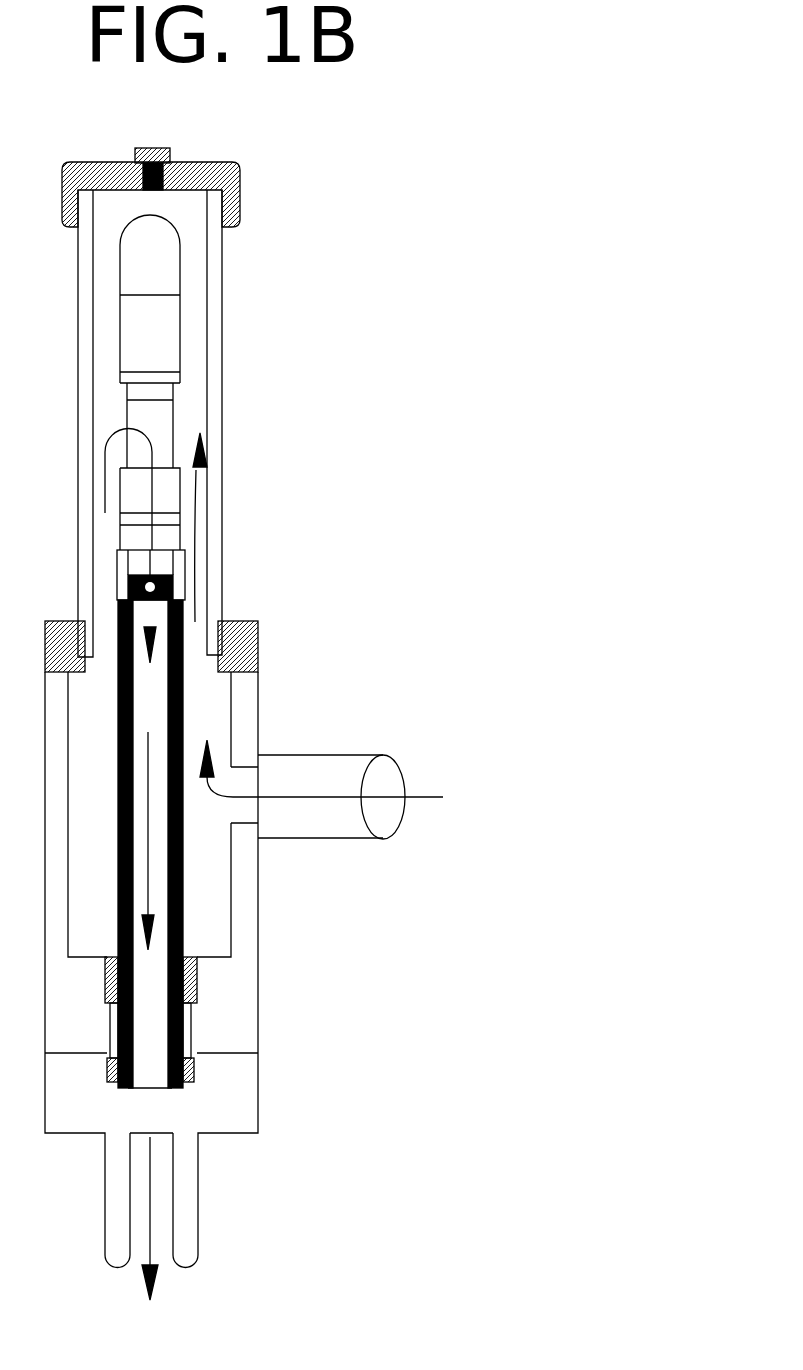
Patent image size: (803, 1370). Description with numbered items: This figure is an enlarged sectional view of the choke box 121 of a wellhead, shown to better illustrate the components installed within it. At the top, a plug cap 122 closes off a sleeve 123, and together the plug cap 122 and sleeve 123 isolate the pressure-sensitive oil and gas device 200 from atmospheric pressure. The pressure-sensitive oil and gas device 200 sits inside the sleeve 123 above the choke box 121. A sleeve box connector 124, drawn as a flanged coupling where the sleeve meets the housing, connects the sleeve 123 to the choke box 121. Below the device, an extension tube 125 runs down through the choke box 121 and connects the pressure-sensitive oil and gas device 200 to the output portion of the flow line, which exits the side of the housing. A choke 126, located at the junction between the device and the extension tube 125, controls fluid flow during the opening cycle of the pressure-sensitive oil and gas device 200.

The plug cap 122 is at (237, 170).
The pressure-sensitive oil and gas device 200 is at (162, 327).
The sleeve 123 is at (215, 415).
The choke 126 is at (180, 577).
The sleeve box connector 124 is at (258, 653).
The choke box 121 is at (245, 728).
The extension tube 125 is at (183, 918).